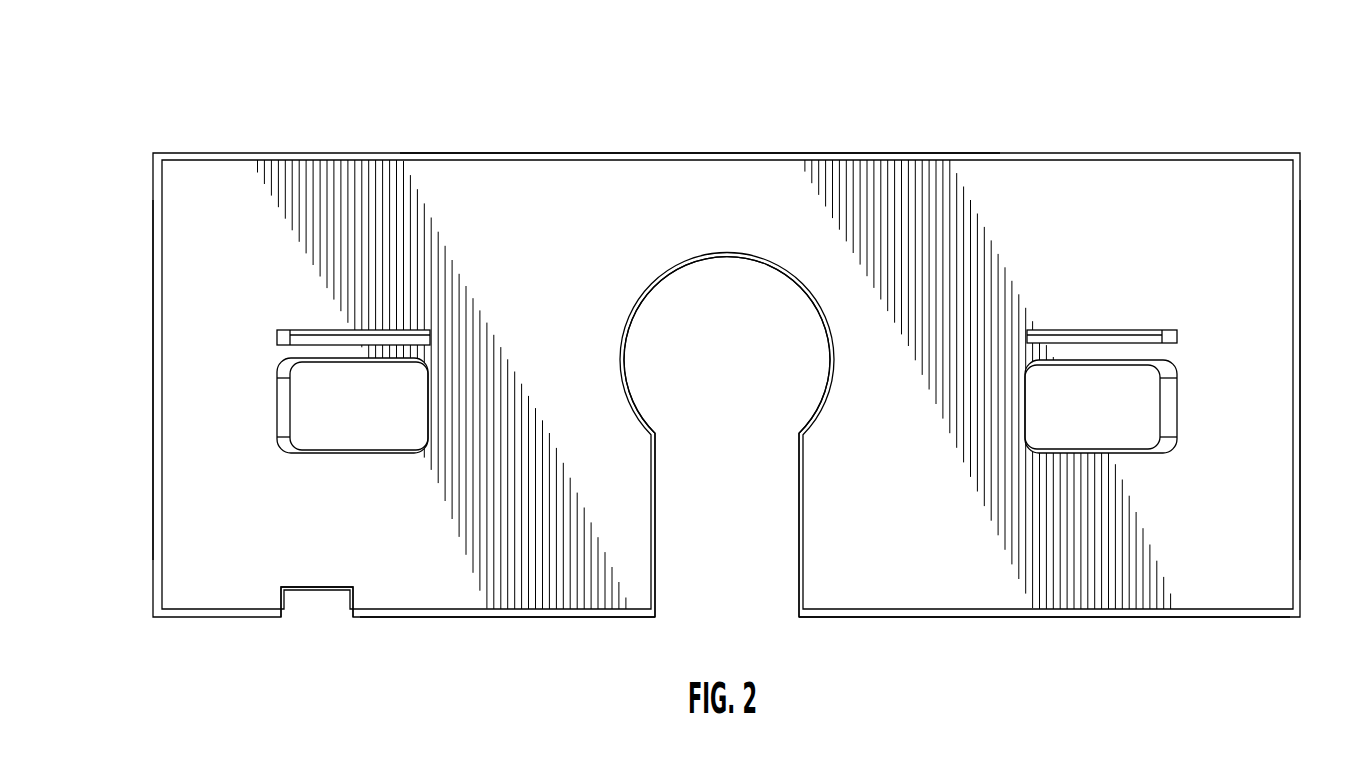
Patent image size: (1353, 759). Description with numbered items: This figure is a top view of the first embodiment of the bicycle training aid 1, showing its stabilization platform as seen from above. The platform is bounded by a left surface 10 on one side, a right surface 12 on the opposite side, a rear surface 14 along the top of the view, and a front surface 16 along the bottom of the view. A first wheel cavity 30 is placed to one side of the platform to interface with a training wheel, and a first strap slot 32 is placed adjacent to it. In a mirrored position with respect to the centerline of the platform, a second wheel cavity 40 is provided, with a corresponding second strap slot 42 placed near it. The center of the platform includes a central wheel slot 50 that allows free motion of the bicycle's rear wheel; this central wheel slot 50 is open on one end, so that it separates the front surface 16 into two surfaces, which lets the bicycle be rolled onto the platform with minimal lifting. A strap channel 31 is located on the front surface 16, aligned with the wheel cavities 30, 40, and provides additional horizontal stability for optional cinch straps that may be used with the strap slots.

The bicycle training aid 1 is at (865, 110).
The left surface 10 is at (153, 358).
The right surface 12 is at (1300, 368).
The rear surface 14 is at (557, 153).
The front surface 16 is at (558, 617).
The first wheel cavity 30 is at (370, 453).
The strap channel 31 is at (295, 607).
The first strap slot 32 is at (315, 330).
The second wheel cavity 40 is at (1130, 453).
The second strap slot 42 is at (1090, 330).
The central wheel slot 50 is at (803, 494).